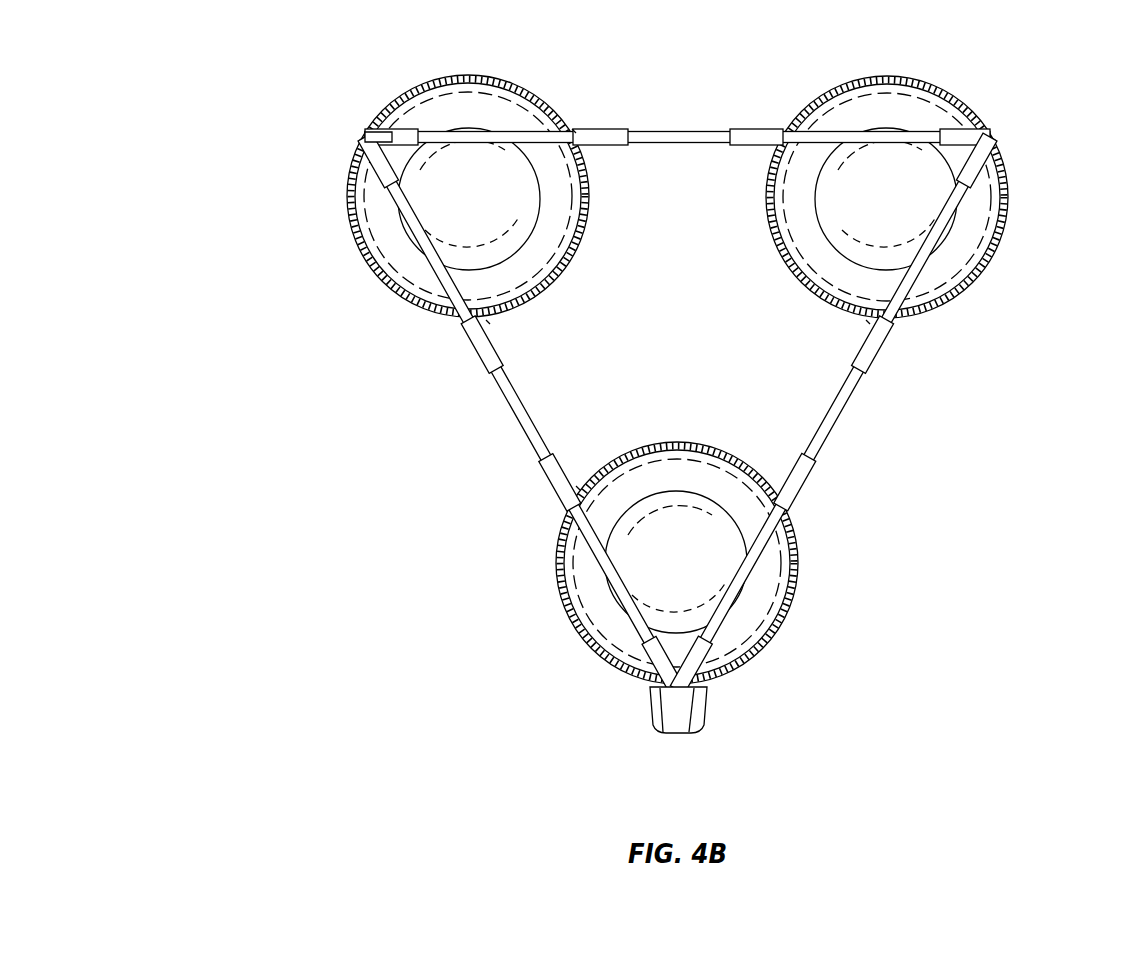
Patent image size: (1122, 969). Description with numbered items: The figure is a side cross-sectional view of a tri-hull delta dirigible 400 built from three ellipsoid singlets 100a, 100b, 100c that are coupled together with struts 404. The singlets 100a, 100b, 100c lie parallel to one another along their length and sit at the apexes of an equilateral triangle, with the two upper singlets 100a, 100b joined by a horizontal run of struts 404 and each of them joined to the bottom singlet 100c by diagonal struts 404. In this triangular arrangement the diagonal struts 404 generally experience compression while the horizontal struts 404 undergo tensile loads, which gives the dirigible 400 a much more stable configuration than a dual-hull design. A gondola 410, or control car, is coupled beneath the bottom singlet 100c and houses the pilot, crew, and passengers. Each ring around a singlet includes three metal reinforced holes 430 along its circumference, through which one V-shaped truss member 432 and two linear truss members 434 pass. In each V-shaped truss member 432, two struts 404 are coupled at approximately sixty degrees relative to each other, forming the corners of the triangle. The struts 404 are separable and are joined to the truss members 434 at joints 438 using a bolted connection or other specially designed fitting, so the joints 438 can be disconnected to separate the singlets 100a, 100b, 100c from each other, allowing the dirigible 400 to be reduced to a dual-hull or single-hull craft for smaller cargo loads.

The tri-hull delta dirigible 400 is at (240, 58).
The strut 404 is at (683, 131).
The gondola 410 is at (648, 720).
The metal reinforced hole 430 is at (366, 136).
The V-shaped truss member 432 is at (390, 132).
The linear truss member 434 is at (753, 146).
The joint 438 is at (576, 128).
The ellipsoid singlet 100a is at (345, 201).
The ellipsoid singlet 100b is at (1008, 197).
The ellipsoid singlet 100c is at (800, 592).